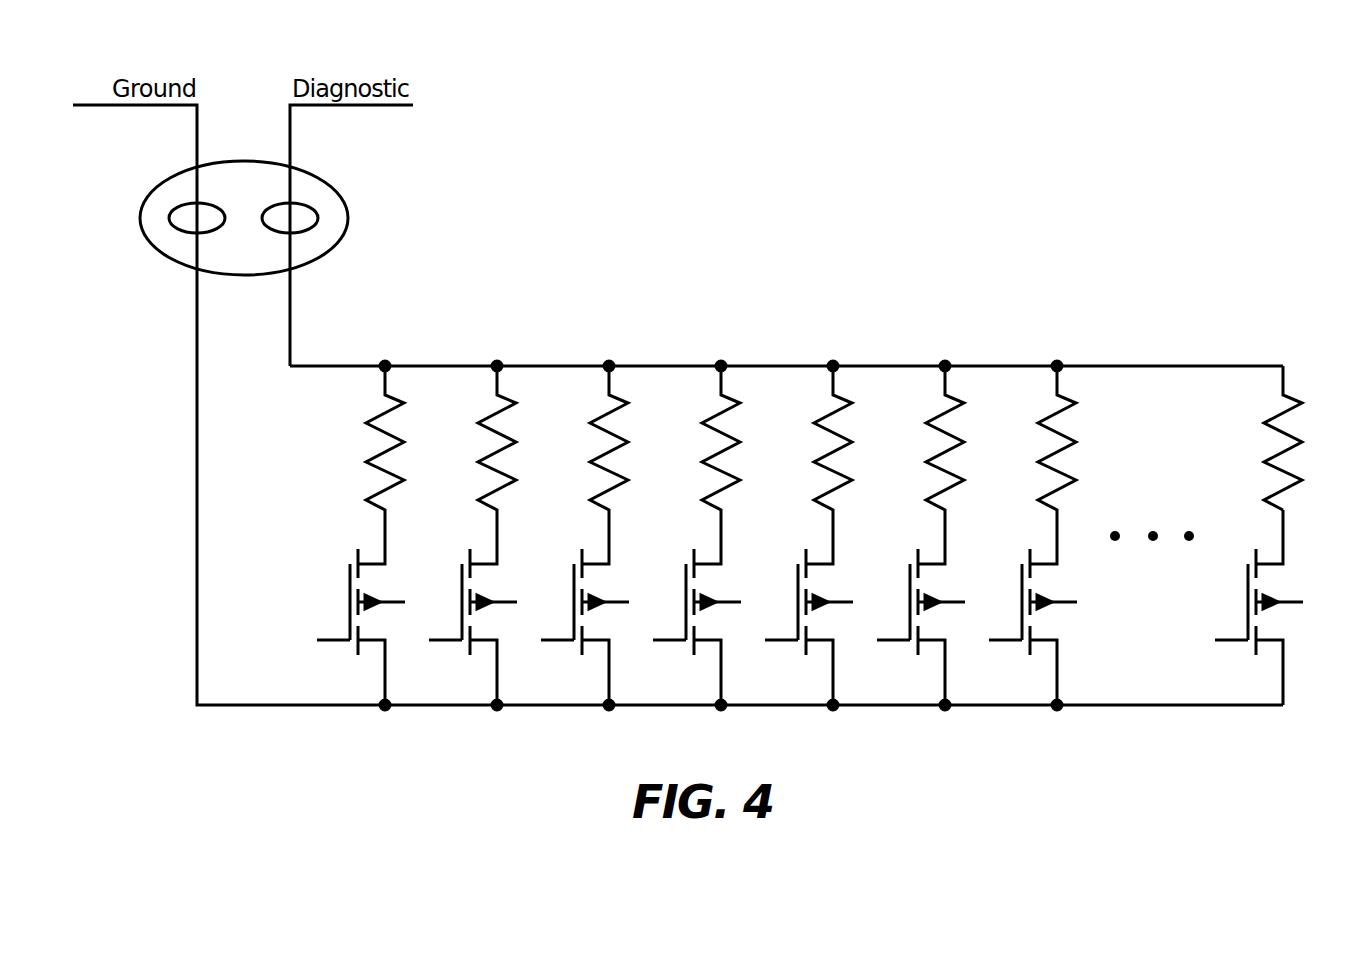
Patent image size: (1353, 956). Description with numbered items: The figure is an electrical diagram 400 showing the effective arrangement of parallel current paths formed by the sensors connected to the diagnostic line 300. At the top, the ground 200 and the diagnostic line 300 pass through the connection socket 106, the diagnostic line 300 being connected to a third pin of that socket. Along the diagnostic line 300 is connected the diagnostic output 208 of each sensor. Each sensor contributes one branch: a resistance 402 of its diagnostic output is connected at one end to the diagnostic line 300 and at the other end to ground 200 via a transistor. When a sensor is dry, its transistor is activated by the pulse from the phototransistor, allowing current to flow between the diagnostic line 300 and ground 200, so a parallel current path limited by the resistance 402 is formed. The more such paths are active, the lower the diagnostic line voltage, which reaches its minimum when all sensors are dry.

The connection socket 106 is at (323, 177).
The ground 200 is at (197, 347).
The diagnostic line 300 is at (290, 308).
The electrical diagram 400 is at (992, 162).
The diagnostic output 208 is at (1283, 366).
The resistance 402 is at (1282, 453).